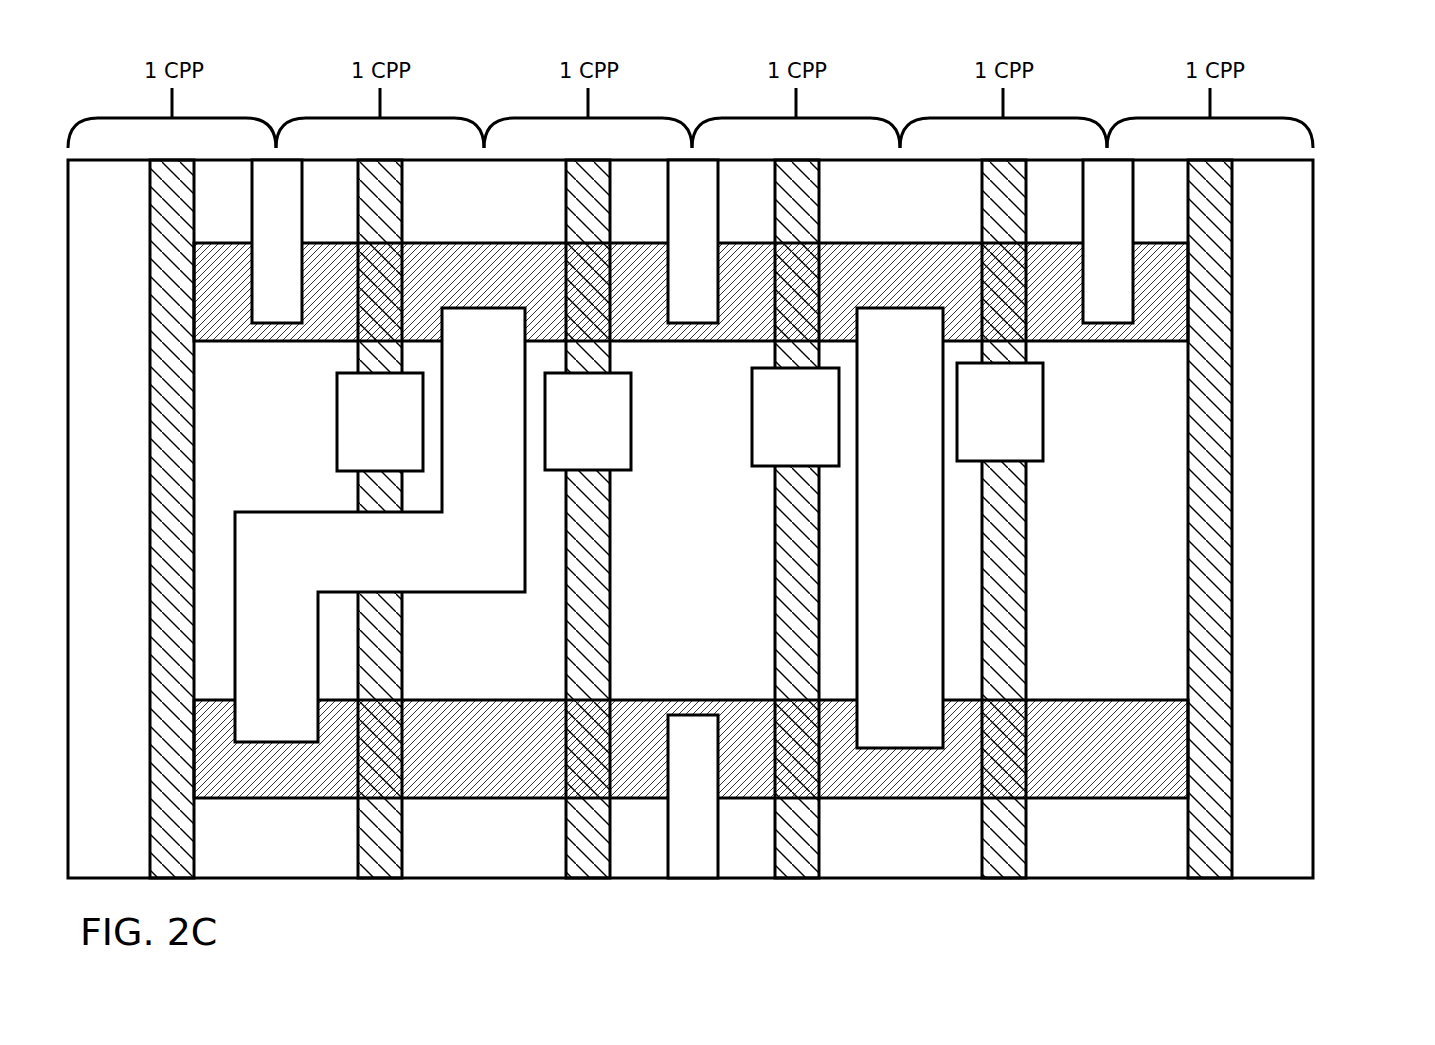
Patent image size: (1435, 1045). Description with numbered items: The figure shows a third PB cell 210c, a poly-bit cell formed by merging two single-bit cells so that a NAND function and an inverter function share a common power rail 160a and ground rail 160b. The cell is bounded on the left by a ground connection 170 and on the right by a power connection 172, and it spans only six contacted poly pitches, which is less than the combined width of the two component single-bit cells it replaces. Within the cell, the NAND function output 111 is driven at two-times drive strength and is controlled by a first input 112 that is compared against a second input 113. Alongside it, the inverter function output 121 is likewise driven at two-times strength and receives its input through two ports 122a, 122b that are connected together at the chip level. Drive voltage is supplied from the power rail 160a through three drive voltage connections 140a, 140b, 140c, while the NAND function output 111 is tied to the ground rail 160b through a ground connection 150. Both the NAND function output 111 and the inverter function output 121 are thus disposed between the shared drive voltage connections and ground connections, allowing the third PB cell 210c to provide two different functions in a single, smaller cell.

The NAND function output 111 is at (361, 566).
The first input 112 is at (361, 433).
The second input 113 is at (569, 433).
The inverter function output 121 is at (881, 531).
The port of input 122a is at (771, 429).
The port of input 122b is at (975, 425).
The drive voltage connection 140a is at (280, 243).
The drive voltage connection 140b is at (700, 243).
The drive voltage connection 140c is at (1118, 243).
The ground connection 150 is at (692, 860).
The power rail 160a is at (517, 243).
The ground rail 160b is at (513, 699).
The ground connection 170 is at (158, 483).
The power connection 172 is at (1205, 485).
The third PB cell 210c is at (744, 489).